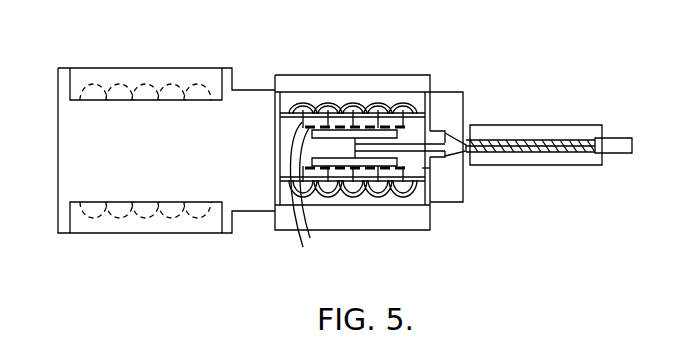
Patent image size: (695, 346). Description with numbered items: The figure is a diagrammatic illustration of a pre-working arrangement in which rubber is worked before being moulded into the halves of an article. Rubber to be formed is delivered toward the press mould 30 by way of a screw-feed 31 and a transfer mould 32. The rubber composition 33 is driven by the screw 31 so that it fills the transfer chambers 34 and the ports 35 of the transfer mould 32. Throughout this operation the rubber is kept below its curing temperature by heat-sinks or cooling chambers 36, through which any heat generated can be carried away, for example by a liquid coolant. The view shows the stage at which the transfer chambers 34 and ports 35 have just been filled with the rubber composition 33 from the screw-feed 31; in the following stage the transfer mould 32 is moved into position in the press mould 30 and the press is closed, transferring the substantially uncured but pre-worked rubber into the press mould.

The press mould 30 is at (209, 81).
The screw-feed 31 is at (565, 139).
The transfer mould 32 is at (419, 166).
The rubber composition 33 is at (446, 131).
The transfer chambers 34 is at (316, 191).
The ports 35 is at (401, 110).
The cooling chambers 36 is at (298, 82).